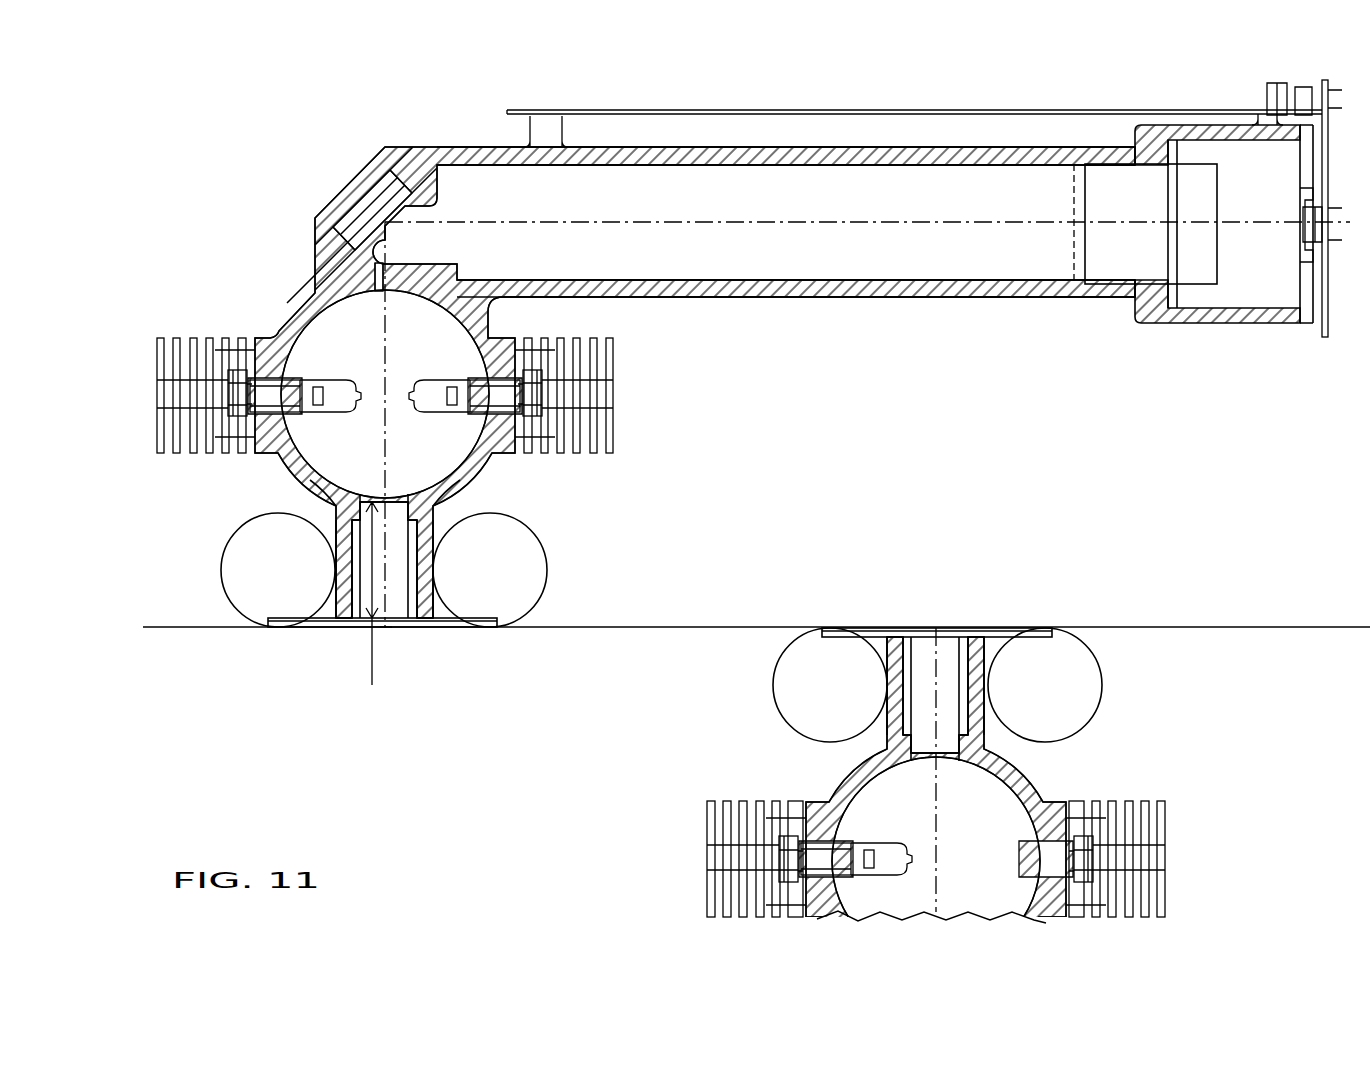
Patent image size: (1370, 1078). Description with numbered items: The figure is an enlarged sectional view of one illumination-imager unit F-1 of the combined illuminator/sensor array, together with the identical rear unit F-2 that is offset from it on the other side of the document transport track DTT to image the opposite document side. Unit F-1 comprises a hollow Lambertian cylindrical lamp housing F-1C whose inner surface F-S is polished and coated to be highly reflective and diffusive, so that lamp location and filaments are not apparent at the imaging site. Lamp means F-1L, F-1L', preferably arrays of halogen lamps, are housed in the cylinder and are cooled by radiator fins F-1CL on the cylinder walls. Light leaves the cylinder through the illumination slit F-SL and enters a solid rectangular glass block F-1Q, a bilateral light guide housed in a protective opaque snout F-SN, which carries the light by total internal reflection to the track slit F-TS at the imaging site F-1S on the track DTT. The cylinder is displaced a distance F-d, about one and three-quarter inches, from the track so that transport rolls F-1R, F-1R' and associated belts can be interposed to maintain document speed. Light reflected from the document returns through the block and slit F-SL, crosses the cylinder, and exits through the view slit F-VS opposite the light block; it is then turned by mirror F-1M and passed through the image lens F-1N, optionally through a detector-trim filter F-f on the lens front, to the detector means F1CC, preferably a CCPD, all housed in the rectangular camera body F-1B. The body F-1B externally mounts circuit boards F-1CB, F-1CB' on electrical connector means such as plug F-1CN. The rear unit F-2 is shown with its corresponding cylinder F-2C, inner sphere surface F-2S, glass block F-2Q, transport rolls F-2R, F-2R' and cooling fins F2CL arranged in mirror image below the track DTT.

The front illumination-imager unit F-1 is at (259, 217).
The cylindrical lamp housing F-1C is at (476, 468).
The camera body F-1B is at (832, 297).
The image lens F-1N is at (1108, 263).
The detector-trim filter F-f is at (1073, 257).
The mirror F-1M is at (363, 192).
The view slit F-VS is at (396, 288).
The circuit board F-1CB is at (857, 116).
The circuit board F-1CB' is at (1297, 241).
The plug F-1CN is at (1283, 84).
The detector means F1CC is at (1301, 215).
The inner surface of cylinder F-S is at (297, 459).
The illumination slit F-SL is at (384, 499).
The snout F-SN is at (338, 522).
The glass block F-1Q is at (402, 538).
The track slit F-TS is at (360, 627).
The imaging site F-1S is at (386, 628).
The displacement distance F-d is at (376, 610).
The transport roll F-1R is at (540, 570).
The transport roll F-1R' is at (226, 570).
The lamp means F-1L is at (310, 377).
The lamp means F-1L' is at (460, 372).
The radiator fins F-1CL is at (205, 338).
The document transport track DTT is at (753, 628).
The rear illumination-imager unit F-2 is at (657, 858).
The second lamp housing casing F-2C is at (1045, 792).
The second integrating sphere F-2S is at (937, 628).
The second tube quill F-2Q is at (988, 737).
The second right roller F-2R is at (1093, 685).
The second left roller F-2R' is at (785, 685).
The second lamp cooling fins F2CL is at (705, 820).